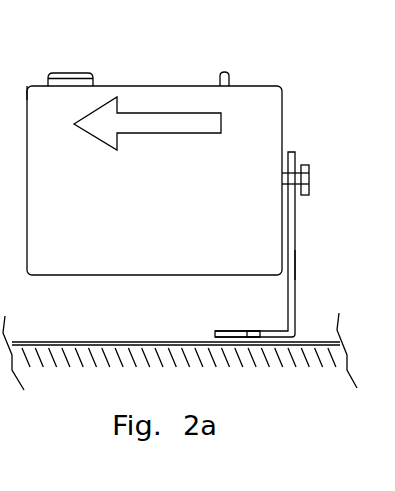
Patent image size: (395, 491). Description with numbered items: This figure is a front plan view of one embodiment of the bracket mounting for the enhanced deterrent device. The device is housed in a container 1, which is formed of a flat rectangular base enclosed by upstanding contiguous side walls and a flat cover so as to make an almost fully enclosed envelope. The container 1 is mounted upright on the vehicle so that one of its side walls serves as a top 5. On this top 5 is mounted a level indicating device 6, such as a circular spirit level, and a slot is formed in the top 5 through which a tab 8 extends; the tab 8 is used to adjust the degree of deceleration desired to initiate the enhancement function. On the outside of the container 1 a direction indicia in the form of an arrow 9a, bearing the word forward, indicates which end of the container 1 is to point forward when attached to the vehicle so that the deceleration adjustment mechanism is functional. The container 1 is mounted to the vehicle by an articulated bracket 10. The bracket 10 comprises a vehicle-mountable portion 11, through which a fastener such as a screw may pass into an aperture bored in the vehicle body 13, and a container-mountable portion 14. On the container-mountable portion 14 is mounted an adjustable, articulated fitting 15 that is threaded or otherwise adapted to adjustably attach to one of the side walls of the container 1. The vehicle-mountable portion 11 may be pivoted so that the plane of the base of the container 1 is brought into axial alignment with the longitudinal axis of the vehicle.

The container 1 is at (38, 98).
The top 5 is at (137, 85).
The level indicating device 6 is at (62, 74).
The tab 8 is at (223, 72).
The arrow 9a is at (165, 131).
The articulated bracket 10 is at (296, 222).
The vehicle-mountable portion 11 is at (237, 331).
The vehicle body 13 is at (245, 339).
The container-mountable portion 14 is at (296, 264).
The adjustable, articulated fitting 15 is at (309, 180).